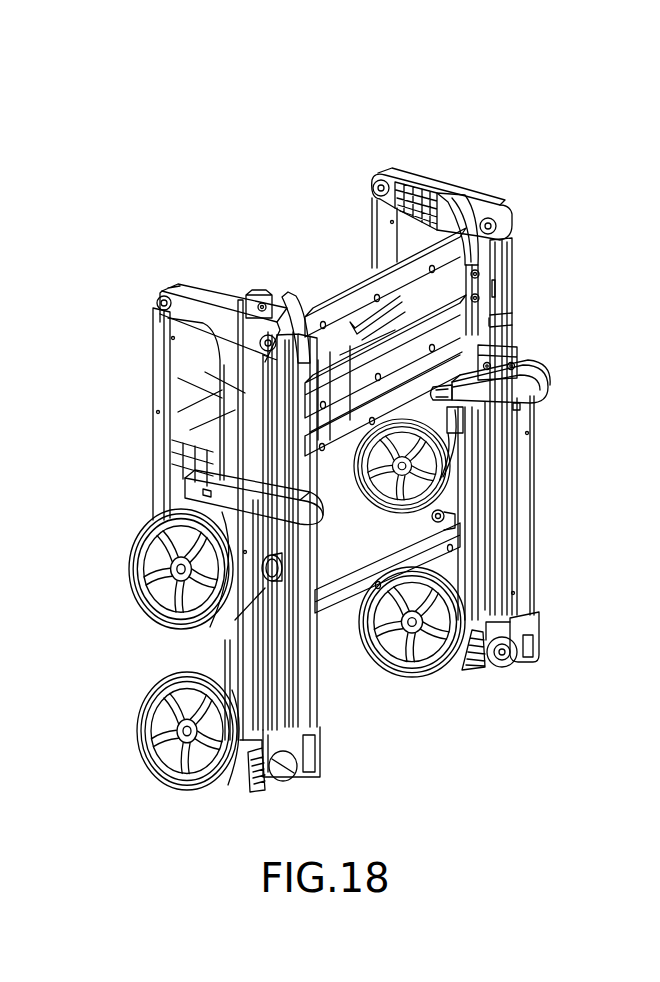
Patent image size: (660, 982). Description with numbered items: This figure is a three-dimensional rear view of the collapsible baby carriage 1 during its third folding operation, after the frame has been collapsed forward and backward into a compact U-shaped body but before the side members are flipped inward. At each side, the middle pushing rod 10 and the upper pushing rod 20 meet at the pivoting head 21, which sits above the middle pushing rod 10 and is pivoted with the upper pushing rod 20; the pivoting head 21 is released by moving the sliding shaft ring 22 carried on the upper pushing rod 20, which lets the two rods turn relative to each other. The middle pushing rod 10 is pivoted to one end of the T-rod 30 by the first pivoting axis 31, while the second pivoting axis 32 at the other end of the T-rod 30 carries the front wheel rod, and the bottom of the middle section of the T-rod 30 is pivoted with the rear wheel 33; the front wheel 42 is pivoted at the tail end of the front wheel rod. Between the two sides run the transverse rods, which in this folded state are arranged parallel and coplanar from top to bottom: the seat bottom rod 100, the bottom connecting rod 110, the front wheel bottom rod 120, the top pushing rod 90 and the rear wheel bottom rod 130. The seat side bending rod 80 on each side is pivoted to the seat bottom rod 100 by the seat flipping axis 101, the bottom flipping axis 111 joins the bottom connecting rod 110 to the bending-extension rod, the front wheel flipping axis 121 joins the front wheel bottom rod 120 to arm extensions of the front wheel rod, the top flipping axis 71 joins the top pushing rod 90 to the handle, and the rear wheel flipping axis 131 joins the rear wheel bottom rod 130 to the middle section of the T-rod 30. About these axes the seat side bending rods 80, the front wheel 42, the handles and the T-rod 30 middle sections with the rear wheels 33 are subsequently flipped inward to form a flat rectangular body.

The baby carriage 1 is at (377, 133).
The middle pushing rod 10 is at (283, 695).
The upper pushing rod 20 is at (312, 662).
The pivoting head 21 is at (282, 775).
The sliding shaft ring 22 is at (238, 615).
The T-rod 30 is at (193, 296).
The first pivoting axis 31 is at (268, 292).
The second pivoting axis 32 is at (158, 296).
The rear wheel 33 is at (150, 703).
The front wheel 42 is at (136, 547).
The top flipping axis 71 is at (505, 432).
The seat side bending rod 80 is at (372, 287).
The top pushing rod 90 is at (493, 486).
The seat bottom rod 100 is at (330, 295).
The seat flipping axis 101 is at (447, 178).
The bottom connecting rod 110 is at (493, 327).
The bottom flipping axis 111 is at (480, 300).
The front wheel bottom rod 120 is at (520, 406).
The front wheel flipping axis 121 is at (474, 347).
The rear wheel bottom rod 130 is at (492, 577).
The rear wheel flipping axis 131 is at (493, 528).